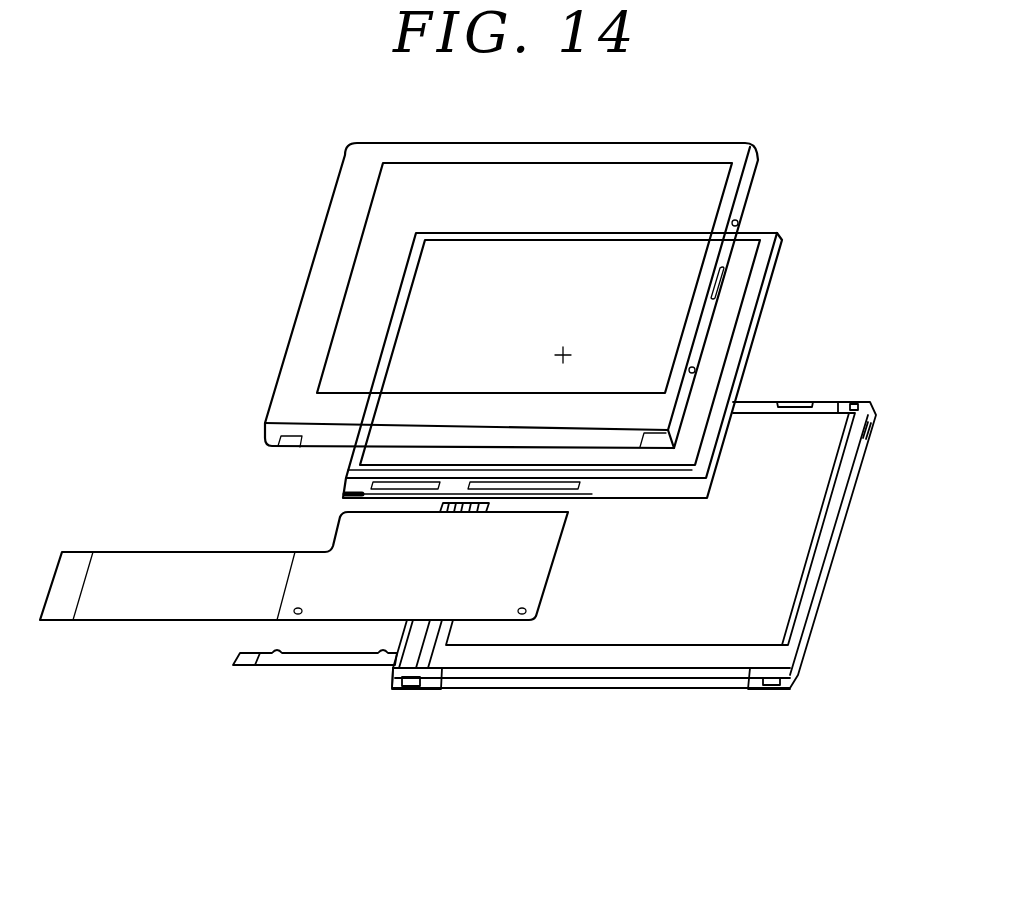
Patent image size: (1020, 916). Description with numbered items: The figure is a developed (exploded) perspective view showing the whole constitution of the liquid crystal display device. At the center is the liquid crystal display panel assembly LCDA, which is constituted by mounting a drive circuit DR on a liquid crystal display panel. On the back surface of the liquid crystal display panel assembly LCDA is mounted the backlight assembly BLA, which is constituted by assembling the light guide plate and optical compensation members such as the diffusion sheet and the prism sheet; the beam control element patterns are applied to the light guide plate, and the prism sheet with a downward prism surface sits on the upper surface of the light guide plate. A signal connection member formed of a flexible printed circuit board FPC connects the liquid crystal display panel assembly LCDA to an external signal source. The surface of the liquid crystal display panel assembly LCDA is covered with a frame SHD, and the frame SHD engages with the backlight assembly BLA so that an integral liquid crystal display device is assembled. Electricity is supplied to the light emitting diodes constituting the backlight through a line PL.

The frame SHD is at (331, 209).
The liquid crystal display panel assembly LCDA is at (750, 347).
The drive circuit DR is at (572, 490).
The flexible printed circuit board FPC is at (160, 550).
The line PL is at (249, 667).
The backlight assembly BLA is at (415, 690).